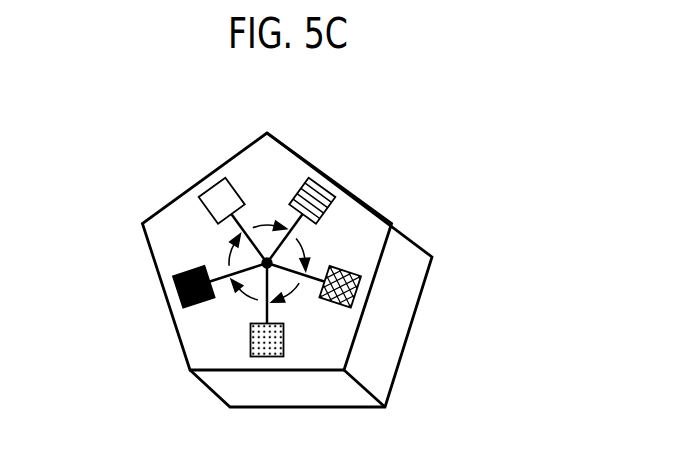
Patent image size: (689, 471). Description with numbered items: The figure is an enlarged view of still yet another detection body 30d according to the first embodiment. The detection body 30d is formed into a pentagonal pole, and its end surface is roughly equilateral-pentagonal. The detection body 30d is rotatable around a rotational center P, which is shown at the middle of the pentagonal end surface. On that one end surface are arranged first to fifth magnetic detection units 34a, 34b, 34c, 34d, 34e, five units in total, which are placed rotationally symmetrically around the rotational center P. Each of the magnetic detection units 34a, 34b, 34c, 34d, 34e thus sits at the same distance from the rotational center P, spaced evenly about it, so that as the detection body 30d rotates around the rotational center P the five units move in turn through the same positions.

The detection body 30d is at (397, 173).
The rotational center P is at (266, 258).
The first magnetic detection unit 34a is at (248, 338).
The second magnetic detection unit 34b is at (182, 273).
The third magnetic detection unit 34c is at (200, 197).
The fourth magnetic detection unit 34d is at (335, 192).
The fifth magnetic detection unit 34e is at (358, 296).